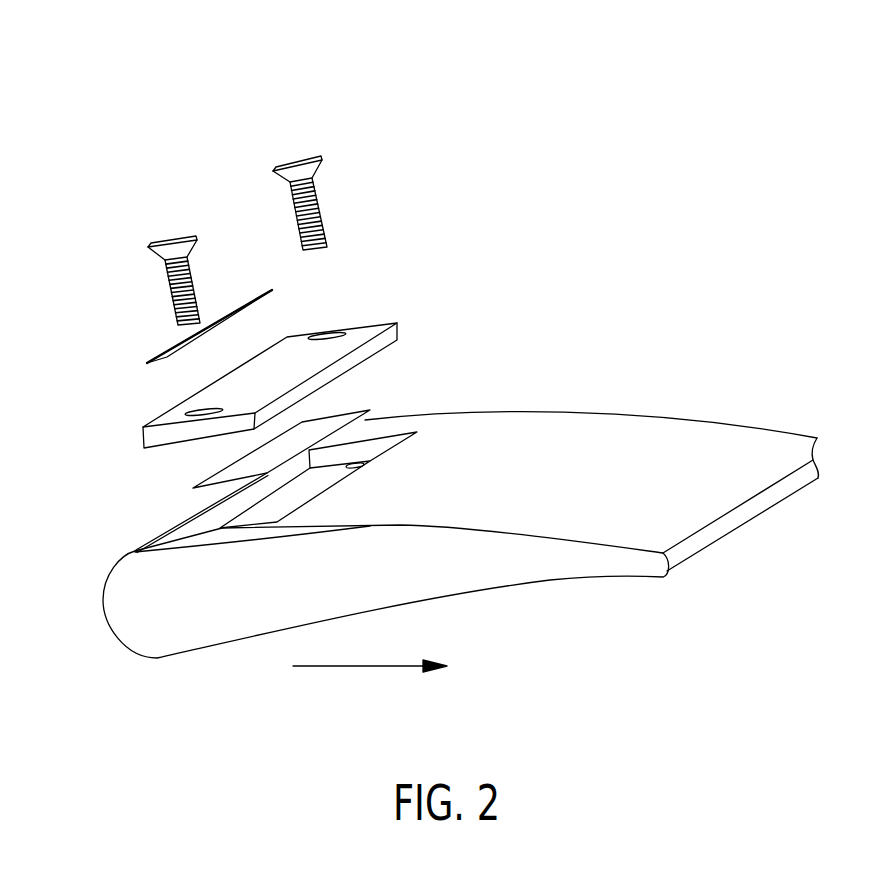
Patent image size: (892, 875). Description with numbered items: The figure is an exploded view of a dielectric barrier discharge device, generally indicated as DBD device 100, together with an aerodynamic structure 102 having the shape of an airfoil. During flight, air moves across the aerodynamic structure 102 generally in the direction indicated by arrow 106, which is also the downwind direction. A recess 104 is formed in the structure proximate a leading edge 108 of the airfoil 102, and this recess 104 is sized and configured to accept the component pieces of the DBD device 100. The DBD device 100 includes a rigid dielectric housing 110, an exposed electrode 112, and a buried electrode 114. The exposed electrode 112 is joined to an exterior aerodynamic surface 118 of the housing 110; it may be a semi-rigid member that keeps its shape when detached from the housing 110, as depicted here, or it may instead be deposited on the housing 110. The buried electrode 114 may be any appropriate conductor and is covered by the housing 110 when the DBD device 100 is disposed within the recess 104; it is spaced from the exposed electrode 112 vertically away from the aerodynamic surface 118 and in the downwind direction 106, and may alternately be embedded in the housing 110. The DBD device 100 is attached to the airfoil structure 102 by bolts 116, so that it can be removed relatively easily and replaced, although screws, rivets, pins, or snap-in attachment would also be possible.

The DBD device 100 is at (112, 74).
The aerodynamic structure 102 is at (757, 448).
The recess 104 is at (377, 443).
The arrow 106 is at (360, 667).
The leading edge 108 is at (103, 617).
The rigid dielectric housing 110 is at (302, 363).
The exposed electrode 112 is at (148, 361).
The buried electrode 114 is at (195, 488).
The bolts 116 is at (173, 237).
The exterior aerodynamic surface 118 is at (293, 346).